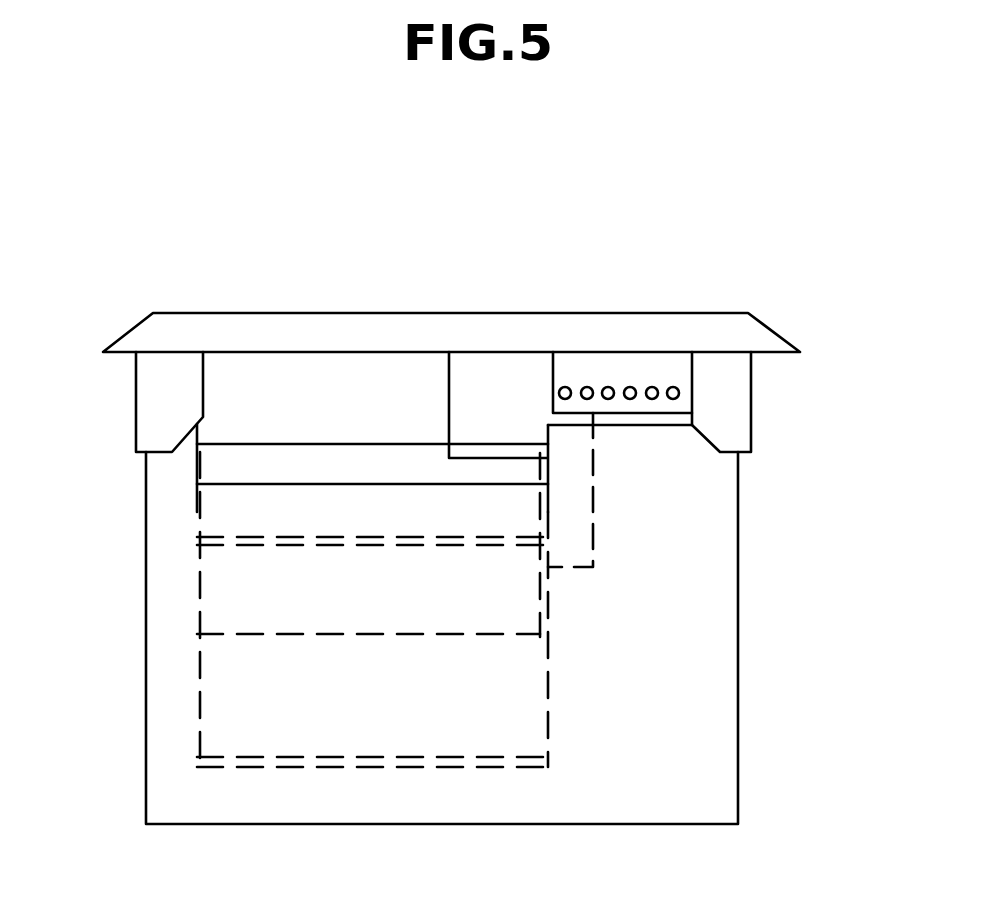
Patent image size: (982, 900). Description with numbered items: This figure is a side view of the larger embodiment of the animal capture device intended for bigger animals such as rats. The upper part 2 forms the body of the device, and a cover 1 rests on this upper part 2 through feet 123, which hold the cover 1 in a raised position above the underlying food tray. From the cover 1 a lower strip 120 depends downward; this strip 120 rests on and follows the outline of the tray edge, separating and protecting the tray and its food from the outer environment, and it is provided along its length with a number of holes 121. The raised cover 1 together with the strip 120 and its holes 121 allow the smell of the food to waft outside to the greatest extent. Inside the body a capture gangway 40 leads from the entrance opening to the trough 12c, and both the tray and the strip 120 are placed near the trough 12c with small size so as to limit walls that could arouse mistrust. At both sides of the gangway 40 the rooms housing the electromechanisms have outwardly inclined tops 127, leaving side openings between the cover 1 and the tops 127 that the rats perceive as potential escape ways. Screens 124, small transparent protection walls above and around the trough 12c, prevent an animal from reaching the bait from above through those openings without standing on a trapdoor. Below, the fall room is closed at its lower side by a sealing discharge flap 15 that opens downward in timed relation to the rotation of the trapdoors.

The cover 1 is at (368, 352).
The upper part 2 is at (431, 700).
The sealing discharge flap 15 is at (247, 757).
The gangway 40 is at (145, 512).
The lower strip 120 is at (617, 367).
The holes 121 is at (565, 399).
The feet 123 is at (728, 398).
The screens 124 is at (466, 401).
The tops 127 is at (282, 467).
The trough 12c is at (577, 505).